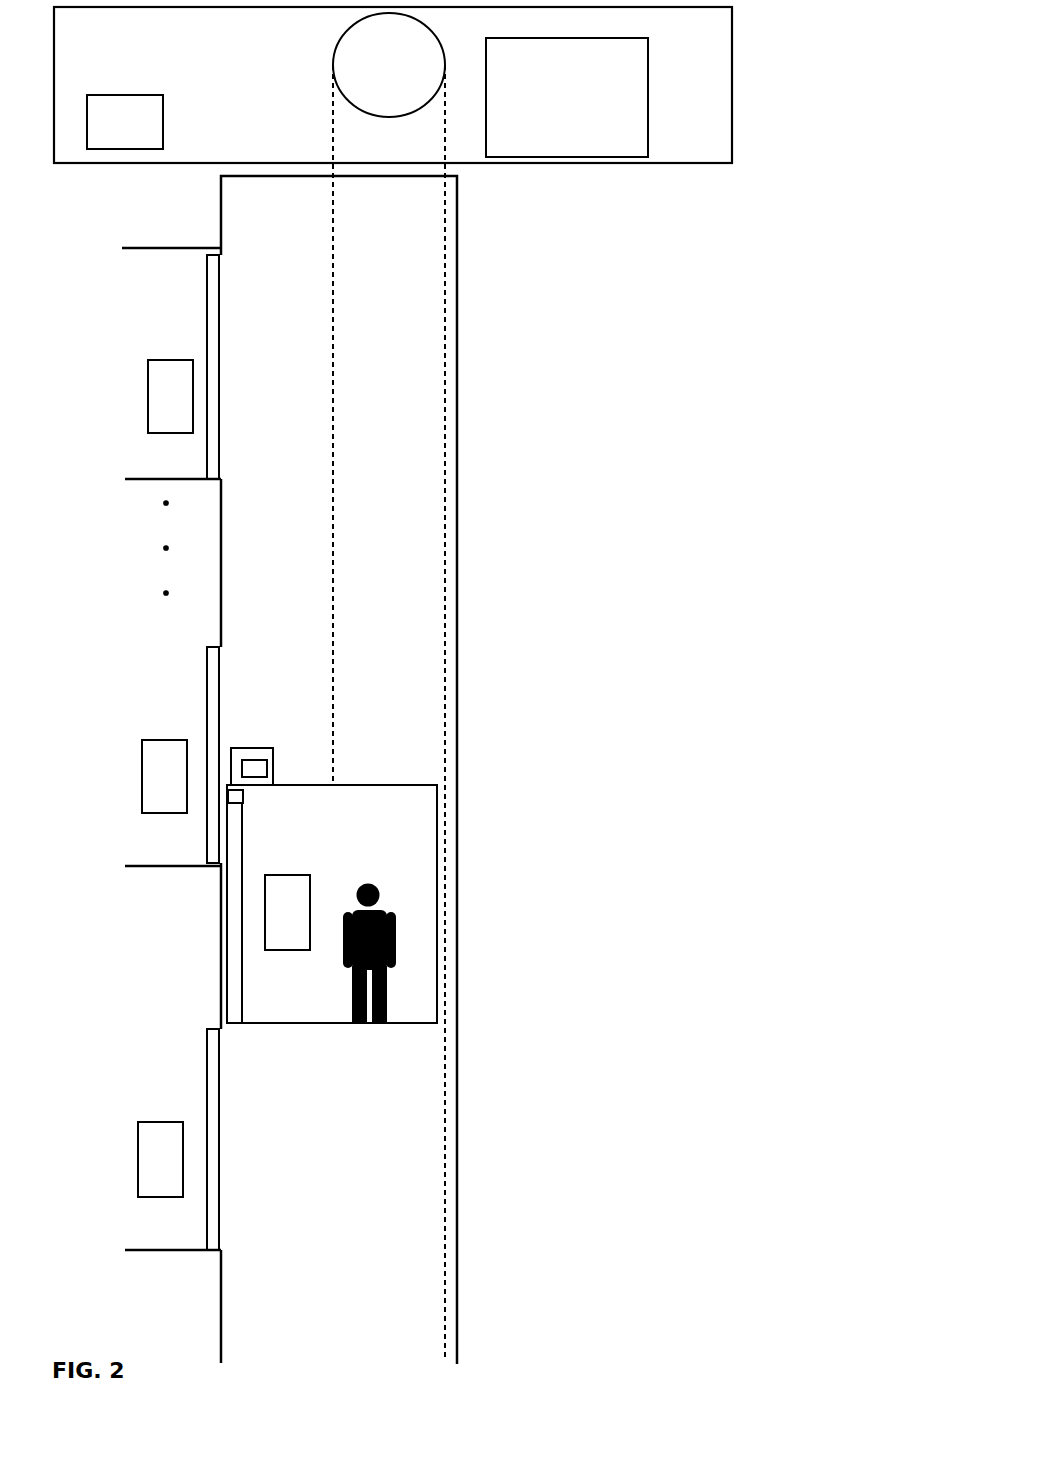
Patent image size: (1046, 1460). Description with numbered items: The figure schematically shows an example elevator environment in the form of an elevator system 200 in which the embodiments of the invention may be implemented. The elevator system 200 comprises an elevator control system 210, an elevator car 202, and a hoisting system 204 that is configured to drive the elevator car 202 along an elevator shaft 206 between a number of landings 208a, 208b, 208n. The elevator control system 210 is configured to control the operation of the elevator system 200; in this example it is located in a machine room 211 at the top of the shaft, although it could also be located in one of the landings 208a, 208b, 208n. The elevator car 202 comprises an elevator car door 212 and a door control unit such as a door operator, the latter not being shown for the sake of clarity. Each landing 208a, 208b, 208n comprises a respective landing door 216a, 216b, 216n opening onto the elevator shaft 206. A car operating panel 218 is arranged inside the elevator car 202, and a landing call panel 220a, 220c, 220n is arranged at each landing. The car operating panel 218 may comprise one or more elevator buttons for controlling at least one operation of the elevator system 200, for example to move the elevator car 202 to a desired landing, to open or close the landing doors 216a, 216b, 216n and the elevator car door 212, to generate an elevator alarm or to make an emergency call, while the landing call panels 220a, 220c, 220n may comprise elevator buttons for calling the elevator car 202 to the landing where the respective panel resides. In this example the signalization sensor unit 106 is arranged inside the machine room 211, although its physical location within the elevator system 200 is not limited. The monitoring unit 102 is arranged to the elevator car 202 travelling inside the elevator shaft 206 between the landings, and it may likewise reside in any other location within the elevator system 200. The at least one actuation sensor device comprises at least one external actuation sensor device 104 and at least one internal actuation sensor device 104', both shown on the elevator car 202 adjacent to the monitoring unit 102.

The elevator system 200 is at (878, 55).
The monitoring unit 102 is at (240, 748).
The external actuation sensor device 104 is at (298, 800).
The internal actuation sensor device 104' is at (320, 754).
The signalization sensor unit 106 is at (147, 93).
The elevator car 202 is at (263, 1023).
The hoisting system 204 is at (335, 52).
The elevator shaft 206 is at (457, 570).
The landing 208a is at (148, 1249).
The landing 208b is at (138, 864).
The landing 208n is at (157, 478).
The elevator control system 210 is at (607, 157).
The machine room 211 is at (729, 163).
The elevator car door 212 is at (228, 967).
The landing door 216a is at (207, 1078).
The landing door 216b is at (206, 703).
The landing door 216n is at (207, 342).
The car operating panel 218 is at (310, 907).
The landing call panel 220a is at (138, 1182).
The landing call panel 220c is at (142, 793).
The landing call panel 220n is at (148, 415).